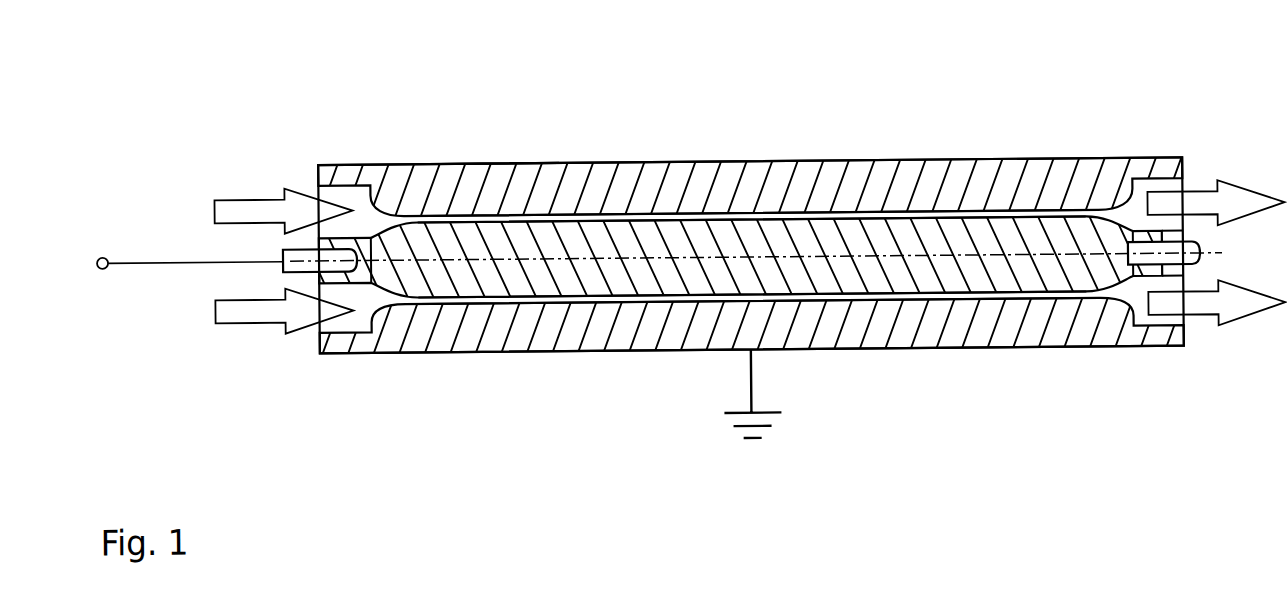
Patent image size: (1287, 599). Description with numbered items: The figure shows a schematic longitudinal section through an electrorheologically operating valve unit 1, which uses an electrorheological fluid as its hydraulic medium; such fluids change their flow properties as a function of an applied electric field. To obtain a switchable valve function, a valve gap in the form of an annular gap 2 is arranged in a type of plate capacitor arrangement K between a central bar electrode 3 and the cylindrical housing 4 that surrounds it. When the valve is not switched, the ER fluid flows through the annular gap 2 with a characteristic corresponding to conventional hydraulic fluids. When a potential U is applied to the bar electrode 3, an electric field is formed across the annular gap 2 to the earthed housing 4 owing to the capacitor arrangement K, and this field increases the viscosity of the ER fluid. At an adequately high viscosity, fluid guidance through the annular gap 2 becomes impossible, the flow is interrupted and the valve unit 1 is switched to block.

The valve unit 1 is at (731, 106).
The annular gap 2 is at (626, 219).
The bar electrode 3 is at (838, 226).
The cylindrical housing 4 is at (978, 170).
The plate capacitor arrangement K is at (498, 152).
The potential U is at (102, 286).